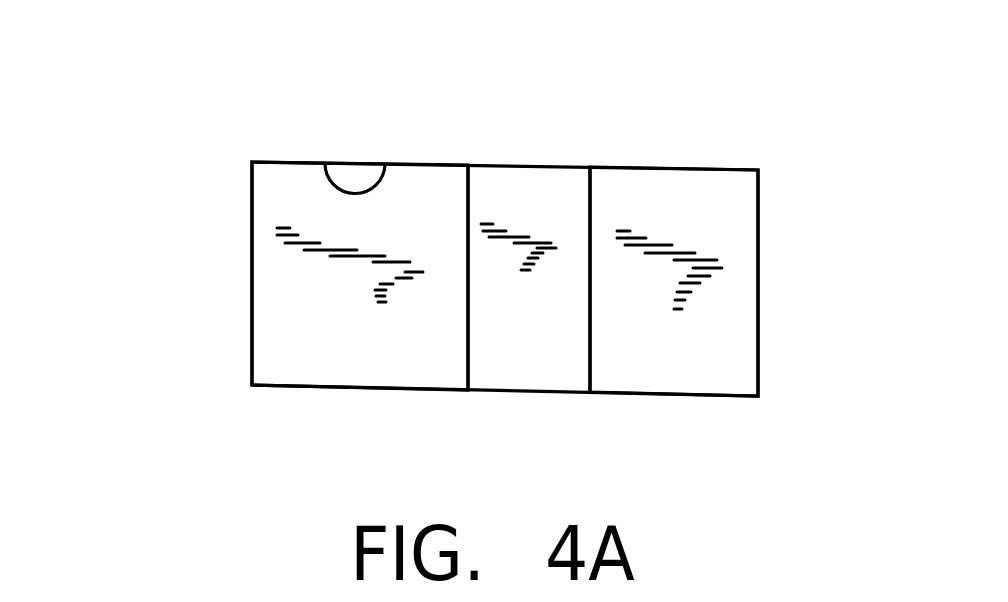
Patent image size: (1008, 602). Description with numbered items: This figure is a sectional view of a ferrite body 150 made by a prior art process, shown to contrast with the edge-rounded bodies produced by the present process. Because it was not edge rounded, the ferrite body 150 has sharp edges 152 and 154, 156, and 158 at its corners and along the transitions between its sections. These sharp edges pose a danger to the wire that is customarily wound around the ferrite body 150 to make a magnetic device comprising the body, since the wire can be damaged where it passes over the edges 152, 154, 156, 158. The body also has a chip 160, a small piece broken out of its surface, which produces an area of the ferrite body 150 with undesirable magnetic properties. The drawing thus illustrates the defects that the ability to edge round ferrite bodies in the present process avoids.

The ferrite body 150 is at (198, 265).
The sharp edge 152 is at (252, 162).
The sharp edge 154 is at (758, 172).
The sharp edge 156 is at (469, 167).
The sharp edge 158 is at (590, 175).
The chip 160 is at (352, 178).